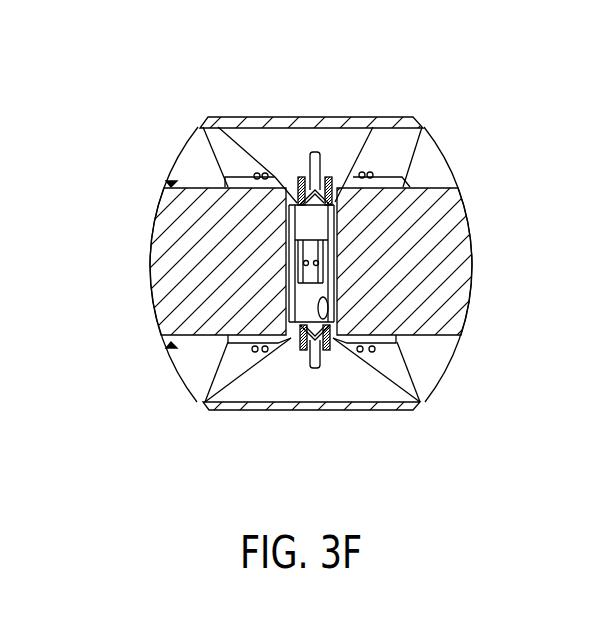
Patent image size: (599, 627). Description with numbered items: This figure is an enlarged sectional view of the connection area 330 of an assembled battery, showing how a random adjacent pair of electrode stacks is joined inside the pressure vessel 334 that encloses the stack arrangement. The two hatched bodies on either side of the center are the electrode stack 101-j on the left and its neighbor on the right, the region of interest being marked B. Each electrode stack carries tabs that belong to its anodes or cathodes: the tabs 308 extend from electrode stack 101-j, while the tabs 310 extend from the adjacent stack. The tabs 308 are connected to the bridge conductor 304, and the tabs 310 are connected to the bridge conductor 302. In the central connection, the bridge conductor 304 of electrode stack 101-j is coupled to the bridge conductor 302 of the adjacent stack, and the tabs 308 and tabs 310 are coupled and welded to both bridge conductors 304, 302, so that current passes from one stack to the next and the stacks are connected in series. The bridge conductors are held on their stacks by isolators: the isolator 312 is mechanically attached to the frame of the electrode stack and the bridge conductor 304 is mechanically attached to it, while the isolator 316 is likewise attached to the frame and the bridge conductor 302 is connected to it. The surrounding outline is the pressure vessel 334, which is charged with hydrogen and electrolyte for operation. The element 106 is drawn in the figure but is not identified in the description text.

The connection area 330 is at (103, 113).
The pressure vessel 334 is at (266, 122).
The tabs 308 is at (297, 230).
The tabs 310 is at (378, 128).
The frame member 106 is at (437, 171).
The electrode stack j 101-j is at (175, 250).
The detail B is at (490, 250).
The isolator 312 is at (290, 348).
The bridge conductor 304 is at (284, 328).
The isolator 316 is at (337, 350).
The bridge conductor 302 is at (336, 341).